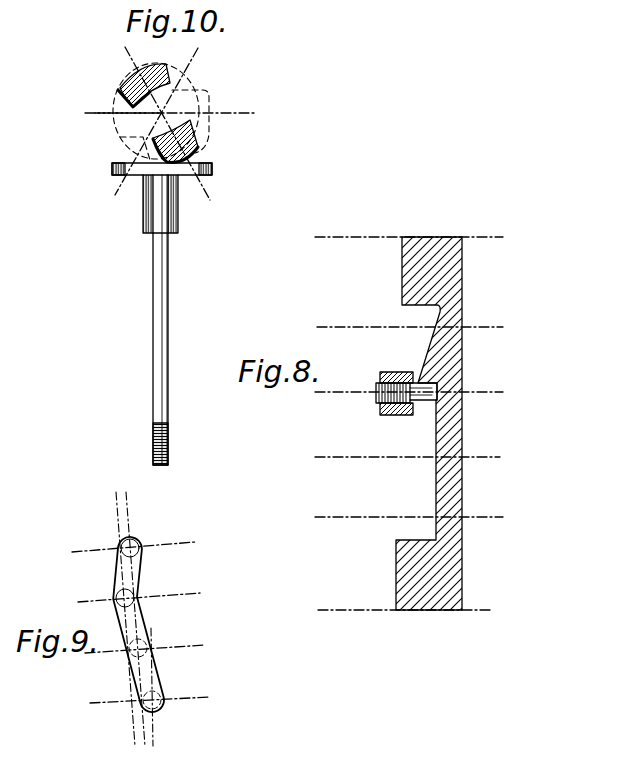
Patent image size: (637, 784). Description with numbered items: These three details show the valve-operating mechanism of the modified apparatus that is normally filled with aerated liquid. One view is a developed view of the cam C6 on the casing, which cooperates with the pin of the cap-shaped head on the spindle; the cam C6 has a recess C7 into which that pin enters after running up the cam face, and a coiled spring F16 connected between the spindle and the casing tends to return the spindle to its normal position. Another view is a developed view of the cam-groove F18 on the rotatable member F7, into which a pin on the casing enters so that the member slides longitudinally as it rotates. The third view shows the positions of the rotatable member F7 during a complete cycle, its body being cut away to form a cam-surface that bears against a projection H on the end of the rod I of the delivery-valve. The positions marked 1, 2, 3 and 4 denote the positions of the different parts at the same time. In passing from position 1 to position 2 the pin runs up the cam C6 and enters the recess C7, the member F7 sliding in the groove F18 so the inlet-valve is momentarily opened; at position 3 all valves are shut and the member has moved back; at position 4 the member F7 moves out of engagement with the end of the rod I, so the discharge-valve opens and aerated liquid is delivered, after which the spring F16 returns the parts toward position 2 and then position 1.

In FIG. 10, the projection H is at (153, 212).
In FIG. 10, the rod I is at (165, 318).
In FIG. 10, the rotatable member F7 is at (200, 149).
In FIG. 9, the cam-groove F18 is at (122, 570).
In FIG. 8, the coiled spring F16 is at (450, 366).
In FIG. 8, the cam C6 is at (427, 378).
In FIG. 8, the recess C7 is at (435, 386).
In FIG. 10, the position 1 is at (178, 115).
In FIG. 9, the position 1 is at (138, 542).
In FIG. 8, the position 1 is at (401, 327).
In FIG. 10, the position 2 is at (171, 137).
In FIG. 9, the position 2 is at (145, 593).
In FIG. 8, the position 2 is at (401, 391).
In FIG. 10, the position 3 is at (151, 132).
In FIG. 9, the position 3 is at (151, 644).
In FIG. 8, the position 3 is at (401, 453).
In FIG. 10, the position 4 is at (115, 115).
In FIG. 9, the position 4 is at (155, 696).
In FIG. 8, the position 4 is at (403, 517).